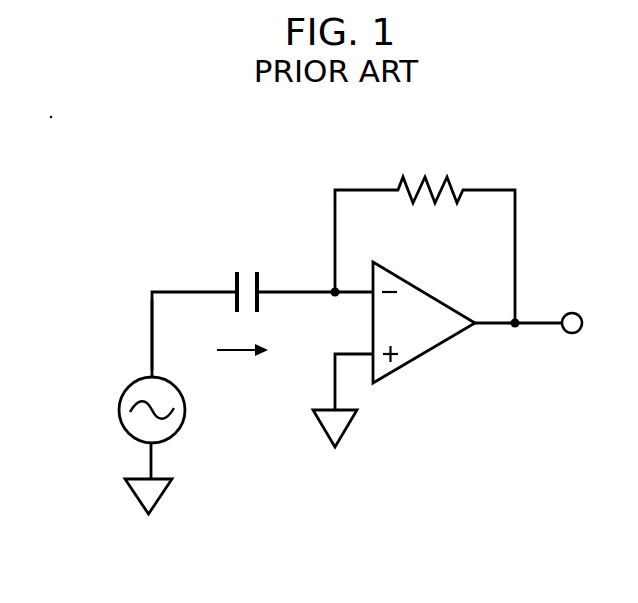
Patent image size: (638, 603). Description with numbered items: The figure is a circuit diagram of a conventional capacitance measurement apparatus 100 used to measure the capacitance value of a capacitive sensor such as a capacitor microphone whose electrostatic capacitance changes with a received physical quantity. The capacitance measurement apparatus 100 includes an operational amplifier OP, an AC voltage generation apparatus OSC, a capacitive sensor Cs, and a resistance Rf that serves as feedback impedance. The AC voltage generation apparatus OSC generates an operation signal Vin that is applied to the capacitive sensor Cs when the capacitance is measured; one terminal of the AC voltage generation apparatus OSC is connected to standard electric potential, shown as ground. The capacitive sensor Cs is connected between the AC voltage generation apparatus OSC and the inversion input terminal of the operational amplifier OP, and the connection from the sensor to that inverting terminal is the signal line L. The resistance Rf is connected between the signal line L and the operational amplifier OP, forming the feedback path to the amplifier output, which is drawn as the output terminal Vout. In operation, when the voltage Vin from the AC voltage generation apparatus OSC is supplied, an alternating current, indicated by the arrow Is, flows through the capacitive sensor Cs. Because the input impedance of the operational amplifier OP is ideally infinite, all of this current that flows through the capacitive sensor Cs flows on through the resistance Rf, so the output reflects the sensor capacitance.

The capacitance measurement apparatus 100 is at (521, 103).
The resistance Rf is at (425, 232).
The capacitive sensor Cs is at (262, 307).
The signal line L is at (316, 278).
The operational amplifier OP is at (394, 354).
The output voltage terminal Vout is at (545, 304).
The AC voltage generation apparatus OSC is at (106, 445).
The operation signal Vin is at (121, 335).
The signal current Is is at (242, 368).